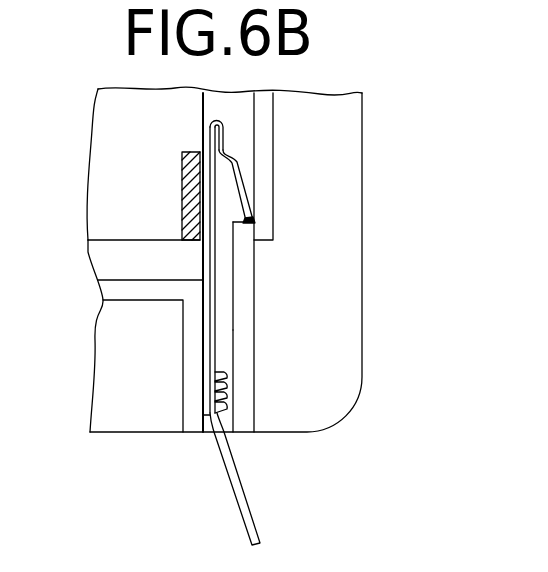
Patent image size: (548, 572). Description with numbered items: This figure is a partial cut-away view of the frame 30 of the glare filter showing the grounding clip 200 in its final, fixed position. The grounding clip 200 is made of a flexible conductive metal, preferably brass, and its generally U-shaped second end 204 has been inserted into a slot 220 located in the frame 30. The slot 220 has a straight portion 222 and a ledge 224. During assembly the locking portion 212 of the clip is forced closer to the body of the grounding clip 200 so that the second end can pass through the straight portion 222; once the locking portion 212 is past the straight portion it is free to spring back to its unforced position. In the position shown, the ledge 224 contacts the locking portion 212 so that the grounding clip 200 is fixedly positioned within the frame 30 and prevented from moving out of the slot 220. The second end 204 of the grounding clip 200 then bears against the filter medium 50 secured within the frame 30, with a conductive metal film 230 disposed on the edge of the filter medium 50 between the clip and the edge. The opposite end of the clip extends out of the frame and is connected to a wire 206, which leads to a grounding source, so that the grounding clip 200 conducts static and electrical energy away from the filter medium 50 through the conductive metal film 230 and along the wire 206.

The frame 30 is at (372, 388).
The filter medium 50 is at (152, 132).
The grounding clip 200 is at (187, 302).
The second end 204 is at (218, 118).
The wire 206 is at (236, 491).
The locking portion 212 is at (246, 178).
The slot 220 is at (240, 304).
The straight portion 222 is at (233, 357).
The ledge 224 is at (256, 224).
The conductive metal film 230 is at (180, 198).